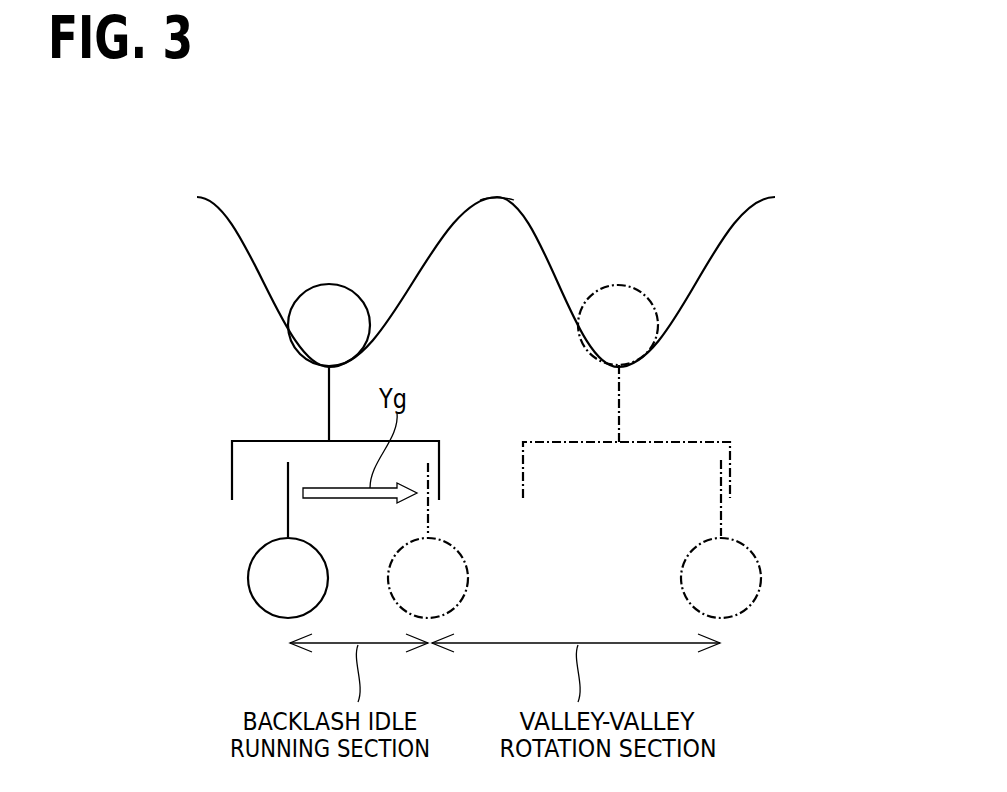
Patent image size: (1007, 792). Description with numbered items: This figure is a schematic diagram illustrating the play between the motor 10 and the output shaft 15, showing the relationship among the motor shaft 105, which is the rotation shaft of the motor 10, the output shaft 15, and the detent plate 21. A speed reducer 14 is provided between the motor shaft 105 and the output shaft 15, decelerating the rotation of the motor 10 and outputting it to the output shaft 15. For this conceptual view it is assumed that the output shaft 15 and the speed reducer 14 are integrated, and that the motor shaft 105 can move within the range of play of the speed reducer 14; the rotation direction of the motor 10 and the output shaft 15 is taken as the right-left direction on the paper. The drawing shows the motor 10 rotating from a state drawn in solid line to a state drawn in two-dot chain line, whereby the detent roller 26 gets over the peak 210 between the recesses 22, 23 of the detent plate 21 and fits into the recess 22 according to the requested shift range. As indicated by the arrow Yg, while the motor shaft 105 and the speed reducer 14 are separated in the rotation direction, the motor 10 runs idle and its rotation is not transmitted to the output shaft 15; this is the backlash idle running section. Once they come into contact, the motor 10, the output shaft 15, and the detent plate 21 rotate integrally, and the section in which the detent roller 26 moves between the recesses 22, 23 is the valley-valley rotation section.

The motor 10 is at (248, 577).
The motor shaft 105 is at (287, 523).
The speed reducer 14 is at (231, 475).
The output shaft 15 is at (327, 403).
The detent plate 21 is at (231, 202).
The peak 210 is at (496, 205).
The recess 22 is at (700, 285).
The recess 23 is at (262, 272).
The detent roller 26 is at (328, 284).